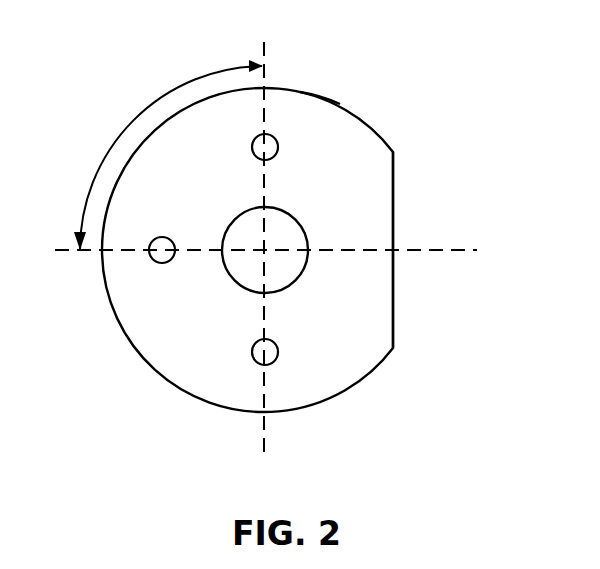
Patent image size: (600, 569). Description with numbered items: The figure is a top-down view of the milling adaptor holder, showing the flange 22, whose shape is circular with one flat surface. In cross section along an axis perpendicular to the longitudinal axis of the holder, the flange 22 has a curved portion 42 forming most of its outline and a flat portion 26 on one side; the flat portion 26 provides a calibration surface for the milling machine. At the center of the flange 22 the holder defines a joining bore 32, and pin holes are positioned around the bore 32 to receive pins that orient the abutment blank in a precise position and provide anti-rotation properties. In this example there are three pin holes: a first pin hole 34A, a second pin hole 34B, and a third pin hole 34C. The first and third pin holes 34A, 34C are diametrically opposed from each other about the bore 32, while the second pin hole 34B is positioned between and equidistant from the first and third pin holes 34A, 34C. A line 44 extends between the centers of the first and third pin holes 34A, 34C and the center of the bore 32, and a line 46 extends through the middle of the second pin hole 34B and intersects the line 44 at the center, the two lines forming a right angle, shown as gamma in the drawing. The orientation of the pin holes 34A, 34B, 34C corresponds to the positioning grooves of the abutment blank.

The flange 22 is at (127, 337).
The flat portion 26 is at (395, 193).
The joining bore 32 is at (288, 270).
The first pin hole 34A is at (253, 352).
The second pin hole 34B is at (148, 257).
The third pin hole 34C is at (270, 143).
The curved portion 42 is at (338, 102).
The line 44 is at (263, 44).
The line 46 is at (450, 250).